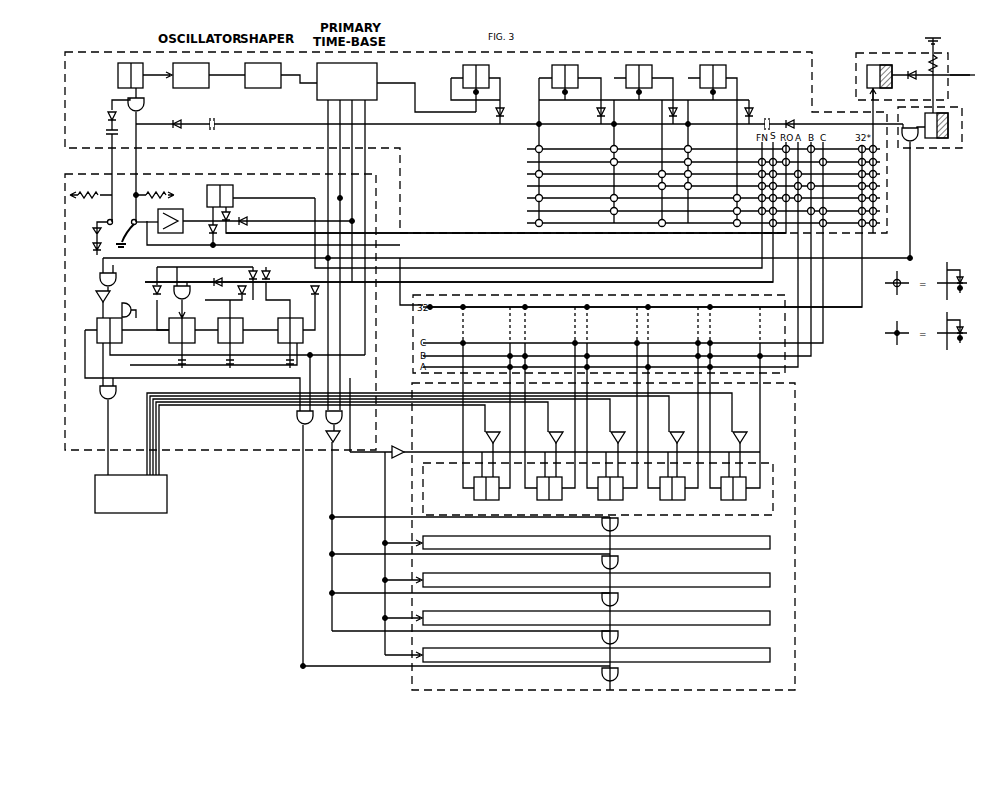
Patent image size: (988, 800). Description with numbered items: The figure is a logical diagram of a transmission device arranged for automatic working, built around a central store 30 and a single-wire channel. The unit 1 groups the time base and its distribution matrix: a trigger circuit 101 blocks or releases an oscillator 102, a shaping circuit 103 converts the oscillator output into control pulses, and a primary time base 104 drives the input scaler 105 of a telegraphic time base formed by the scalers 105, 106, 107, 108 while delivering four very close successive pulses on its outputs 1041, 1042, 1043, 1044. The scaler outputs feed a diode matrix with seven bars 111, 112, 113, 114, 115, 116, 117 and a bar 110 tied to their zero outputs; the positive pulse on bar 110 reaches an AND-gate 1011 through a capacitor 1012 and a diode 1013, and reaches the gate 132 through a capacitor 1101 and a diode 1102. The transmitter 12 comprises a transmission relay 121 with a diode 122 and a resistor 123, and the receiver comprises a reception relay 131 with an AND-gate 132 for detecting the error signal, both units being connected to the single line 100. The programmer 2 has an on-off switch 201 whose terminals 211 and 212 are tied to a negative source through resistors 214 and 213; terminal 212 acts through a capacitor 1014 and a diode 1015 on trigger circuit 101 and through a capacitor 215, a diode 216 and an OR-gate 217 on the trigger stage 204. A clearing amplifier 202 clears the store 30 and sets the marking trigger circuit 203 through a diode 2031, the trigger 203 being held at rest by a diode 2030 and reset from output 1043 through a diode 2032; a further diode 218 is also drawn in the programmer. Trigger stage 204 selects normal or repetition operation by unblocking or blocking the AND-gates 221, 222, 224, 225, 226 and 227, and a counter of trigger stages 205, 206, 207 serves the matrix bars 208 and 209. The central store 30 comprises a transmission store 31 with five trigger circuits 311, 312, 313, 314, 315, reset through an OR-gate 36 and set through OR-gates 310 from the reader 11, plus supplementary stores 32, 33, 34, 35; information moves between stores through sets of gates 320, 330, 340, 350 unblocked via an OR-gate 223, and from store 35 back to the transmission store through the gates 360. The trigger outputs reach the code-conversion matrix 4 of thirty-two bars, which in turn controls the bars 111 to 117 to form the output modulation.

The time base unit 1 is at (128, 52).
The programmer 2 is at (78, 176).
The code-conversion matrix 4 is at (785, 373).
The reader 11 is at (167, 485).
The transmitter 12 is at (856, 73).
The central store 30 is at (795, 392).
The transmission store 31 is at (765, 465).
The supplementary store 32 is at (758, 534).
The supplementary store 33 is at (758, 573).
The supplementary store 34 is at (758, 611).
The supplementary store 35 is at (758, 648).
The OR-gate 36 is at (400, 445).
The single line 100 is at (962, 67).
The trigger circuit 101 is at (118, 75).
The oscillator 102 is at (213, 66).
The shaping circuit 103 is at (281, 75).
The primary time base 104 is at (377, 70).
The scaler 105 is at (480, 92).
The scaler 106 is at (575, 141).
The scaler 107 is at (650, 141).
The scaler 108 is at (719, 141).
The bar 110 is at (440, 126).
The bar 111 is at (556, 149).
The bar 112 is at (556, 162).
The bar 113 is at (556, 174).
The bar 114 is at (556, 186).
The bar 115 is at (556, 198).
The bar 116 is at (556, 211).
The bar 117 is at (556, 223).
The transmission relay 121 is at (889, 66).
The diode 122 is at (912, 80).
The resistor 123 is at (940, 75).
The reception relay 131 is at (935, 137).
The AND-gate 132 is at (905, 127).
The on-off switch 201 is at (130, 235).
The clearing amplifier 202 is at (190, 208).
The marking trigger circuit 203 is at (233, 190).
The trigger stage 204 is at (96, 326).
The trigger stage 205 is at (187, 317).
The trigger stage 206 is at (241, 331).
The trigger stage 207 is at (294, 346).
The matrix bar 208 is at (268, 276).
The matrix bar 209 is at (207, 268).
The terminal 211 is at (145, 215).
The terminal 212 is at (102, 216).
The resistor 213 is at (91, 189).
The resistor 214 is at (154, 189).
The capacitor 215 is at (93, 230).
The diode 216 is at (93, 247).
The OR-gate 217 is at (96, 296).
The diode 218 is at (459, 282).
The AND-gate 221 is at (340, 416).
The AND-gate 222 is at (295, 418).
The OR-gate 223 is at (327, 440).
The AND-gate 224 is at (100, 394).
The AND-gate 225 is at (131, 304).
The gate 226 is at (189, 292).
The AND-gate 227 is at (114, 282).
The OR-gates 310 is at (488, 436).
The trigger circuit 311 is at (495, 489).
The trigger circuit 312 is at (558, 489).
The trigger circuit 313 is at (619, 489).
The trigger circuit 314 is at (681, 489).
The trigger circuit 315 is at (742, 489).
The set of gates 320 is at (602, 528).
The set of gates 330 is at (602, 565).
The set of gates 340 is at (602, 602).
The set of gates 350 is at (602, 640).
The set of output gates 360 is at (602, 677).
The AND-gate 1011 is at (140, 106).
The capacitor 1012 is at (212, 129).
The diode 1013 is at (181, 134).
The capacitor 1014 is at (106, 131).
The diode 1015 is at (110, 112).
The output 1041 is at (329, 242).
The output 1042 is at (341, 242).
The output 1043 is at (353, 178).
The output 1044 is at (366, 214).
The capacitor 1101 is at (771, 117).
The diode 1102 is at (792, 119).
The diode 2030 is at (209, 229).
The diode 2031 is at (504, 218).
The diode 2032 is at (246, 221).